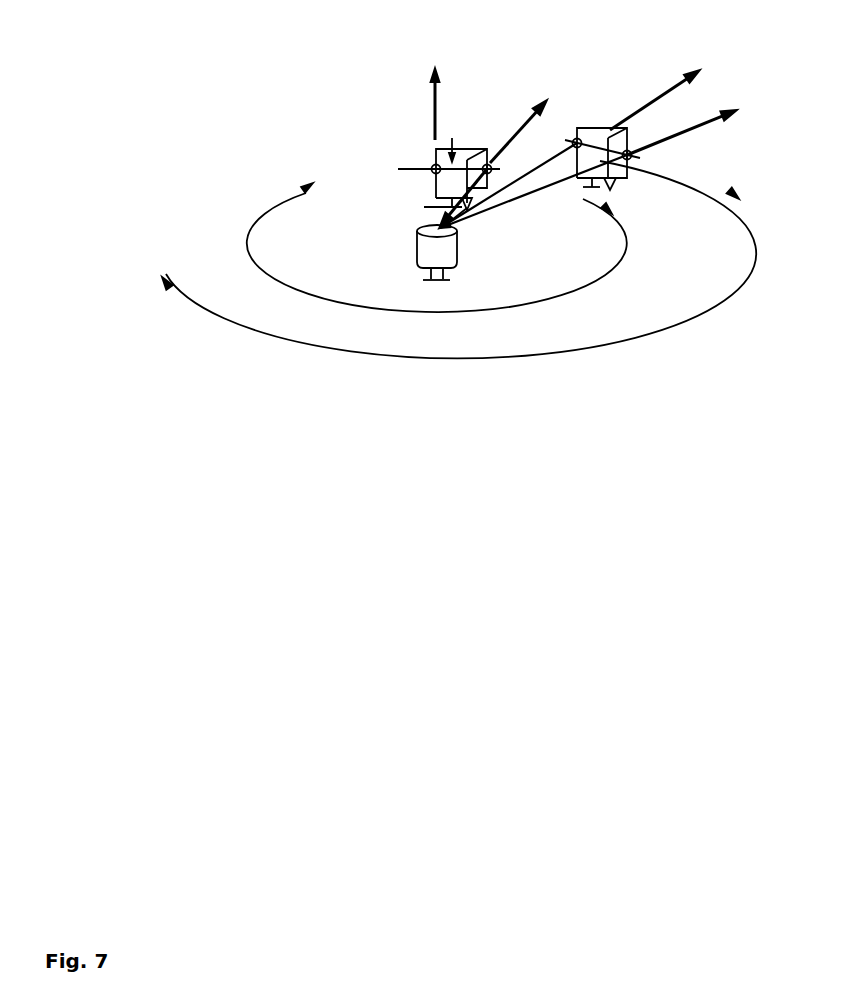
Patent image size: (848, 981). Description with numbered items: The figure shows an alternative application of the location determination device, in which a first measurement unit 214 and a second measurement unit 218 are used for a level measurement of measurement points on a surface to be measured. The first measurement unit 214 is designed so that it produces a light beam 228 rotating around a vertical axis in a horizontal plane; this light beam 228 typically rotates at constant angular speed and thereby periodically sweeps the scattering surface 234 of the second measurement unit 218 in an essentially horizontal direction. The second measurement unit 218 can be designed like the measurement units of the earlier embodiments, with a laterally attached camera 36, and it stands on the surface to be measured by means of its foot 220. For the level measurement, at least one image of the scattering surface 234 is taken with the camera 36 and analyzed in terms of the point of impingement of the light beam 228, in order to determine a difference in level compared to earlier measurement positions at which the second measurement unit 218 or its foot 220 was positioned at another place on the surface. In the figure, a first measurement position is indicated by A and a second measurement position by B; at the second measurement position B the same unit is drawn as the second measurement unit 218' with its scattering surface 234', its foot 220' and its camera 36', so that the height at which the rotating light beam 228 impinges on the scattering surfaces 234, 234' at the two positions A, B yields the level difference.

The first measurement position A is at (446, 132).
The second measurement position B is at (603, 110).
The second measurement unit 218 is at (480, 136).
The second measurement unit 218' is at (582, 94).
The scattering surface 234 is at (292, 155).
The scattering surface 234' is at (638, 85).
The foot 220 is at (278, 216).
The foot 220' is at (693, 275).
The camera 36 is at (492, 313).
The camera 36' is at (621, 225).
The light beam 228 is at (528, 174).
The first measurement unit 214 is at (400, 257).